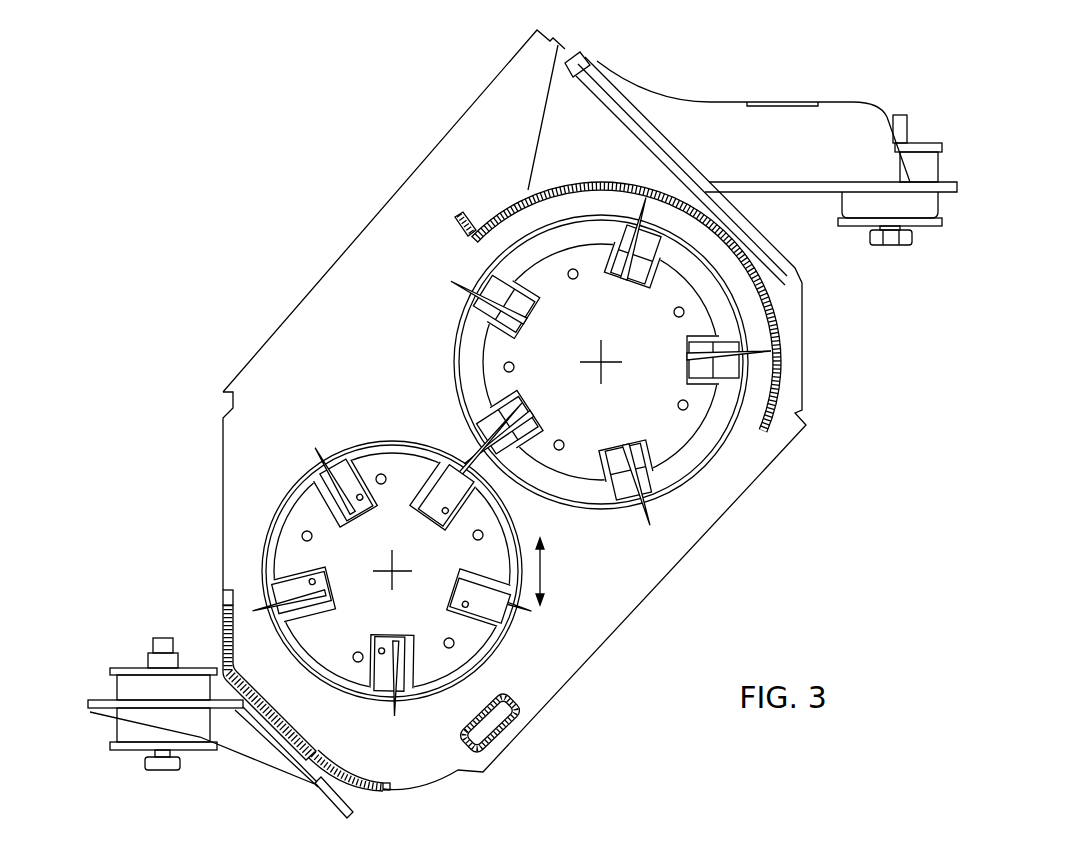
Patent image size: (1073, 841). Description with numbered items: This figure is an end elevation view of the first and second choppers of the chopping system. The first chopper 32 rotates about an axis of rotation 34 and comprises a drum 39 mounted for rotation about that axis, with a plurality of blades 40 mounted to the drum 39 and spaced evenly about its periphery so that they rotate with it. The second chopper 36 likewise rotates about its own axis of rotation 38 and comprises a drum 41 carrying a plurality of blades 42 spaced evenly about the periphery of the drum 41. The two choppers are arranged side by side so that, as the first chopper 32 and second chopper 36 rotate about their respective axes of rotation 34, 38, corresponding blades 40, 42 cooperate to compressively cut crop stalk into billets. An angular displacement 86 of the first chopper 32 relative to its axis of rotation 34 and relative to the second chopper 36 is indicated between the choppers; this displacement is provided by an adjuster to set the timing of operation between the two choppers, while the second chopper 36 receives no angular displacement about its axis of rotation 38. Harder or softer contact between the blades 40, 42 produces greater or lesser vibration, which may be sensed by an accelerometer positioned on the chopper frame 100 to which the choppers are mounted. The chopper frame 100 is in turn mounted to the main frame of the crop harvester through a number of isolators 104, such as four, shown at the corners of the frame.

The first chopper 32 is at (411, 530).
The axis of rotation 34 is at (392, 571).
The second chopper 36 is at (556, 380).
The axis of rotation 38 is at (601, 362).
The drum 39 is at (300, 530).
The blades 40 is at (465, 450).
The drum 41 is at (677, 423).
The blades 42 is at (513, 497).
The angular displacement 86 is at (550, 568).
The chopper frame 100 is at (703, 135).
The isolators 104 is at (932, 166).